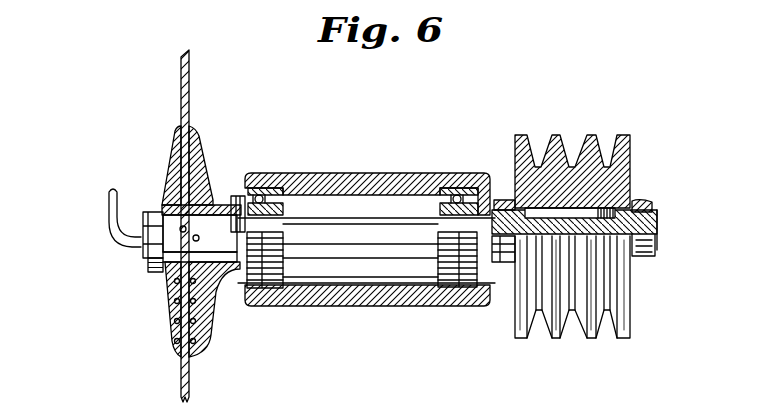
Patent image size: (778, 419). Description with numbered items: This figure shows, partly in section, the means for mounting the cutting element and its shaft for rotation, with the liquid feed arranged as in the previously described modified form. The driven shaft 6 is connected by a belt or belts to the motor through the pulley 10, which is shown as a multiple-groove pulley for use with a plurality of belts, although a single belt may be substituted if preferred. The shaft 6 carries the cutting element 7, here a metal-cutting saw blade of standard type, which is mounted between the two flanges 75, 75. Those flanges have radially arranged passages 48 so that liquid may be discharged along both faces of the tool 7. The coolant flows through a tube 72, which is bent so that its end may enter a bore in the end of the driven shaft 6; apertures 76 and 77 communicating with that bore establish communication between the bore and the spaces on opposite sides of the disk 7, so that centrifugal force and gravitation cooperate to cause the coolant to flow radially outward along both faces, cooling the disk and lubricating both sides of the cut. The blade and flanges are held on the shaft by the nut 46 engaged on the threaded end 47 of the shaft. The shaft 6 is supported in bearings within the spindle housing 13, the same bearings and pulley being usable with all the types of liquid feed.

The shaft 6 is at (650, 223).
The cutting element 7 is at (182, 77).
The pulley 10 is at (620, 174).
The spindle housing 13 is at (406, 178).
The nut 46 is at (172, 289).
The threaded end 47 is at (155, 270).
The radial passages 48 is at (177, 132).
The tube 72 is at (112, 206).
The flanges 75 is at (167, 167).
The aperture 76 is at (211, 204).
The aperture 77 is at (200, 236).